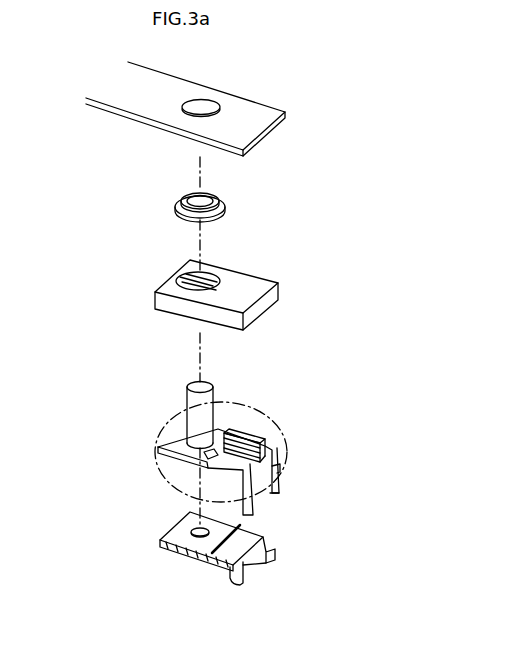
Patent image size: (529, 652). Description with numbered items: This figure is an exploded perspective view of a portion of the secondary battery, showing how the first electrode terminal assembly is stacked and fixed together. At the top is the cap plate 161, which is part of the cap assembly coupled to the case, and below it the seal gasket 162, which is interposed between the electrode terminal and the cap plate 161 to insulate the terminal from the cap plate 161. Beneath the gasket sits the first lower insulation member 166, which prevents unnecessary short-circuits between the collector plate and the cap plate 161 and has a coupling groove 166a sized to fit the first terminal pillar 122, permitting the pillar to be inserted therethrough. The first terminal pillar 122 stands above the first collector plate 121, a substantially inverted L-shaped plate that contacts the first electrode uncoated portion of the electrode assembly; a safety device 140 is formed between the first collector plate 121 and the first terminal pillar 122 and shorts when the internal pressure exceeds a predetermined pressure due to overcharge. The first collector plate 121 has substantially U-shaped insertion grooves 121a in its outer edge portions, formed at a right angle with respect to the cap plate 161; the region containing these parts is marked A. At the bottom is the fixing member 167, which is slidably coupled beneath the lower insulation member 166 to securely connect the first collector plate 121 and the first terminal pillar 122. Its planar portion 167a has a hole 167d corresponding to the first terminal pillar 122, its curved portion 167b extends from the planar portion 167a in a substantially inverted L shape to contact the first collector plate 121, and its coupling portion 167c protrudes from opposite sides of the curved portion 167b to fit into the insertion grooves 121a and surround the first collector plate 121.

The cap plate 161 is at (252, 103).
The seal gasket 162 is at (226, 203).
The first lower insulation member 166 is at (208, 283).
The coupling groove 166a is at (188, 280).
The first terminal pillar 122 is at (208, 383).
The safety device 140 is at (247, 440).
The first collector plate 121 is at (261, 450).
The insertion groove 121a is at (280, 468).
The fixing member 167 is at (147, 542).
The planar portion 167a is at (181, 538).
The curved portion 167b is at (213, 554).
The coupling portion 167c is at (232, 586).
The hole 167d is at (192, 527).
The region A is at (250, 408).